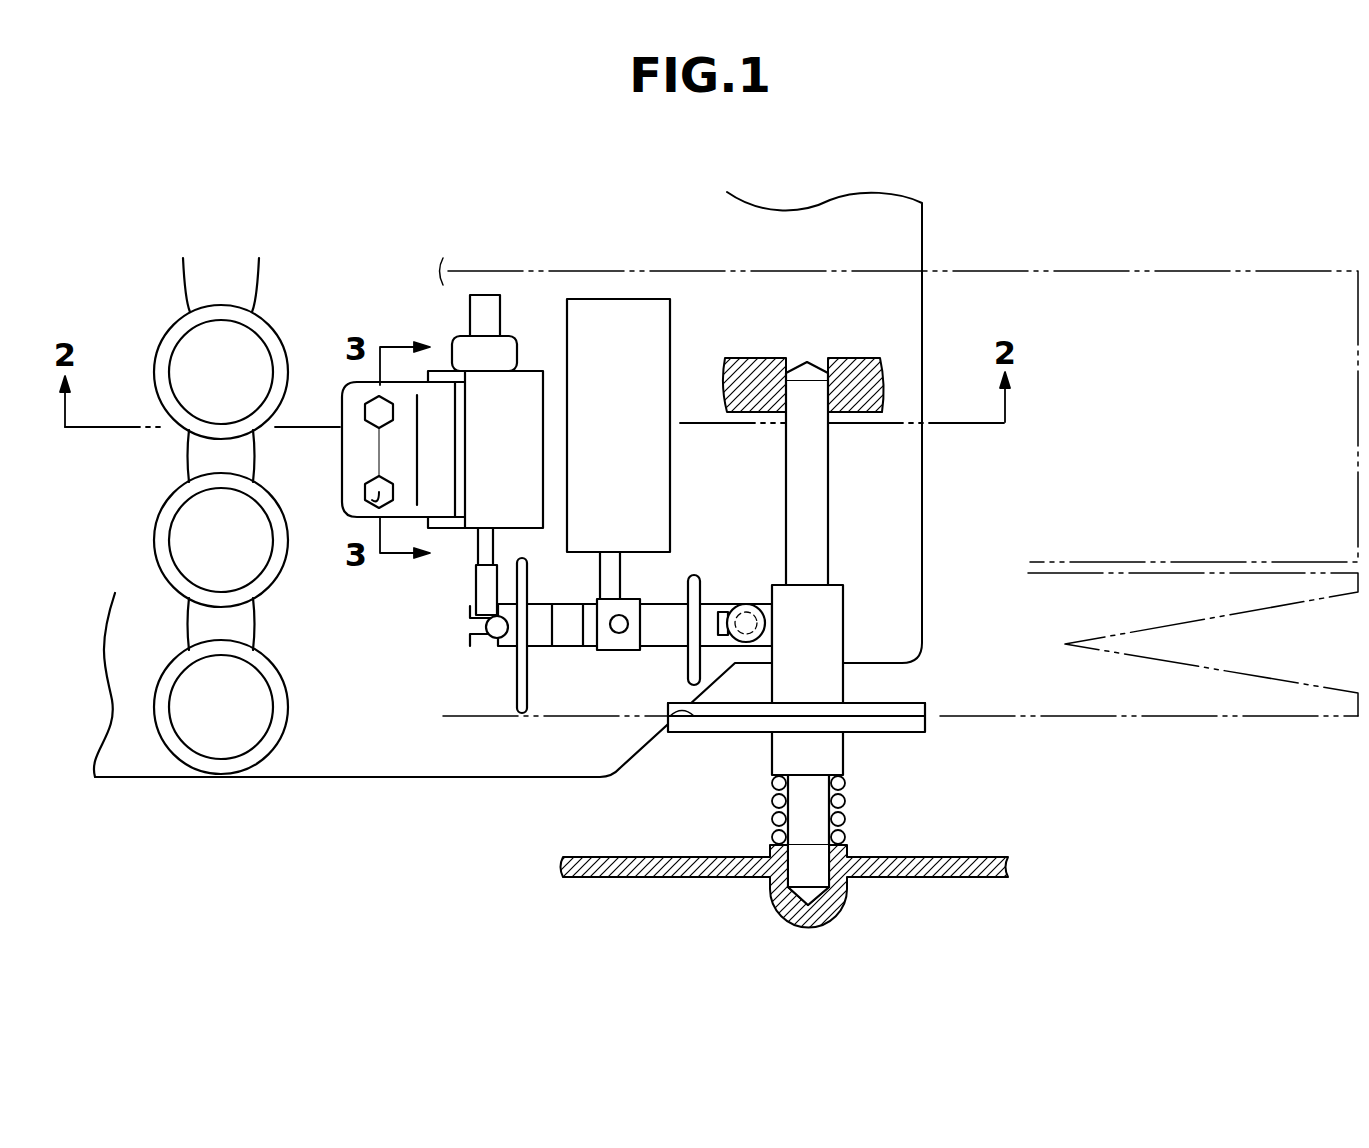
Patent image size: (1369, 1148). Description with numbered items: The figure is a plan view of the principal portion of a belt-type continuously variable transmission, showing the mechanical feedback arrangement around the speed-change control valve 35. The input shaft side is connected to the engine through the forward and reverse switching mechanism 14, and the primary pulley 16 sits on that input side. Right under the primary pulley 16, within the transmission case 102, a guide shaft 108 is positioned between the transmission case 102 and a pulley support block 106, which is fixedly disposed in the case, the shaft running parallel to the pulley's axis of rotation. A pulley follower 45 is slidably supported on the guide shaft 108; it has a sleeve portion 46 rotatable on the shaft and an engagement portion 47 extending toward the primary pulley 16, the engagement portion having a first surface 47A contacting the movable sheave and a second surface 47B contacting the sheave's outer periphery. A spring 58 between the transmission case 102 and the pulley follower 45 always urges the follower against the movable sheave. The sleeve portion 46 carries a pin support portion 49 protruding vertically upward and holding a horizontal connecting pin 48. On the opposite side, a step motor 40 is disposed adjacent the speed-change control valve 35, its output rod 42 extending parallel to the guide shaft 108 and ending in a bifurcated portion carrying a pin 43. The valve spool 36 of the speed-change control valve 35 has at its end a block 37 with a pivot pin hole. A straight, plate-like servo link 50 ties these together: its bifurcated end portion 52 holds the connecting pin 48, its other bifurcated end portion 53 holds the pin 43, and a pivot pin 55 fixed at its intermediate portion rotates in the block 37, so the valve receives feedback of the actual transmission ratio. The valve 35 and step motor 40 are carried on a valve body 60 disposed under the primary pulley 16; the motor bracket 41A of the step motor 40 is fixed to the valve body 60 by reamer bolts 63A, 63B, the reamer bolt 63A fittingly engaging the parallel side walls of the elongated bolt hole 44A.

The forward and reverse switching mechanism 14 is at (1103, 262).
The primary pulley 16 is at (1258, 664).
The speed-change control valve 35 is at (672, 318).
The valve spool 36 is at (598, 582).
The block 37 is at (636, 604).
The step motor 40 is at (522, 397).
The mounting bracket 41A is at (447, 390).
The output rod 42 is at (477, 552).
The pin 43 is at (485, 628).
The bolt hole 44A is at (372, 500).
The pulley follower 45 is at (858, 631).
The sleeve portion 46 is at (850, 597).
The engagement portion 47 is at (926, 710).
The first surface 47A is at (678, 709).
The second surface 47B is at (896, 708).
The connecting pin 48 is at (746, 612).
The pin support portion 49 is at (723, 615).
The servo link 50 is at (542, 647).
The bifurcated end portion 52 is at (708, 608).
The bifurcated end portion 53 is at (483, 645).
The pivot pin 55 is at (619, 634).
The spring 58 is at (845, 795).
The valve body 60 is at (365, 790).
The reamer bolt 63A is at (372, 487).
The reamer bolt 63B is at (372, 407).
The transmission case 102 is at (640, 879).
The pulley support block 106 is at (855, 374).
The guide shaft 108 is at (812, 503).